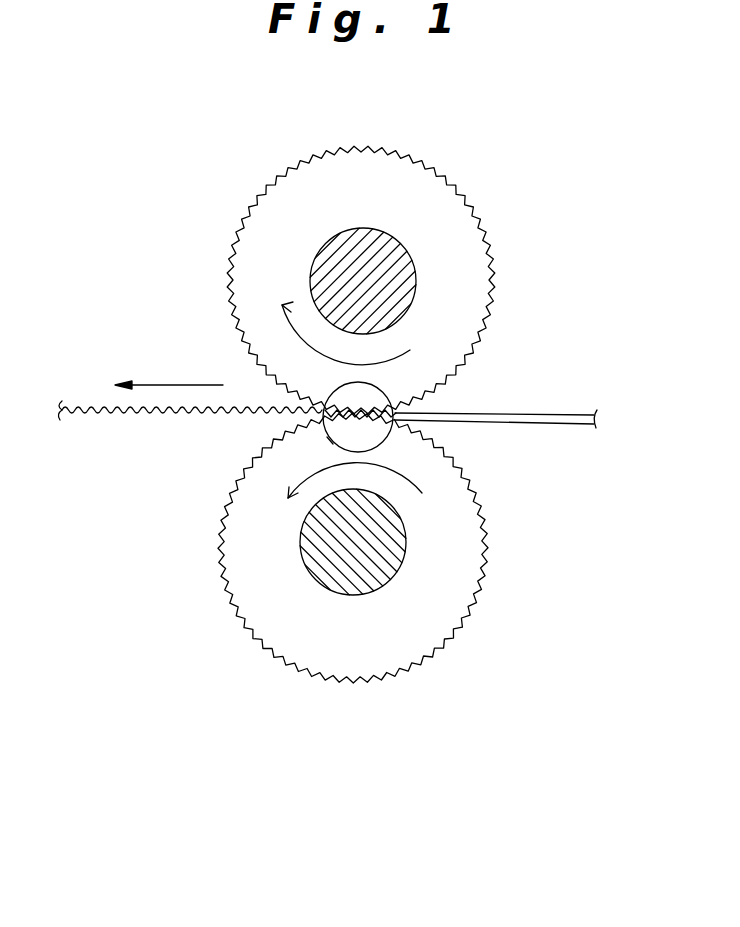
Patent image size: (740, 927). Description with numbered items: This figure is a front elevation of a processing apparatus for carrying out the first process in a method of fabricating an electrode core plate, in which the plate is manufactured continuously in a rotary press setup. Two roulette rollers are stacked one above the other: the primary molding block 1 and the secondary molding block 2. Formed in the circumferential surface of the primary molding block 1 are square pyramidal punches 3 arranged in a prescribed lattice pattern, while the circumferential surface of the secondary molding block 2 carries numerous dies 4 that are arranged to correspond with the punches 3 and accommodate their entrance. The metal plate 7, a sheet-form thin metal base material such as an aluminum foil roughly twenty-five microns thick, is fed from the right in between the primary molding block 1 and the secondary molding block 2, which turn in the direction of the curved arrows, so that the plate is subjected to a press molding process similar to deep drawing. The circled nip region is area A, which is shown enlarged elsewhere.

The primary molding block 1 is at (462, 270).
The secondary molding block 2 is at (460, 578).
The square pyramidal punches 3 is at (300, 159).
The dies 4 is at (488, 545).
The metal plate 7 is at (547, 413).
The area A is at (380, 448).